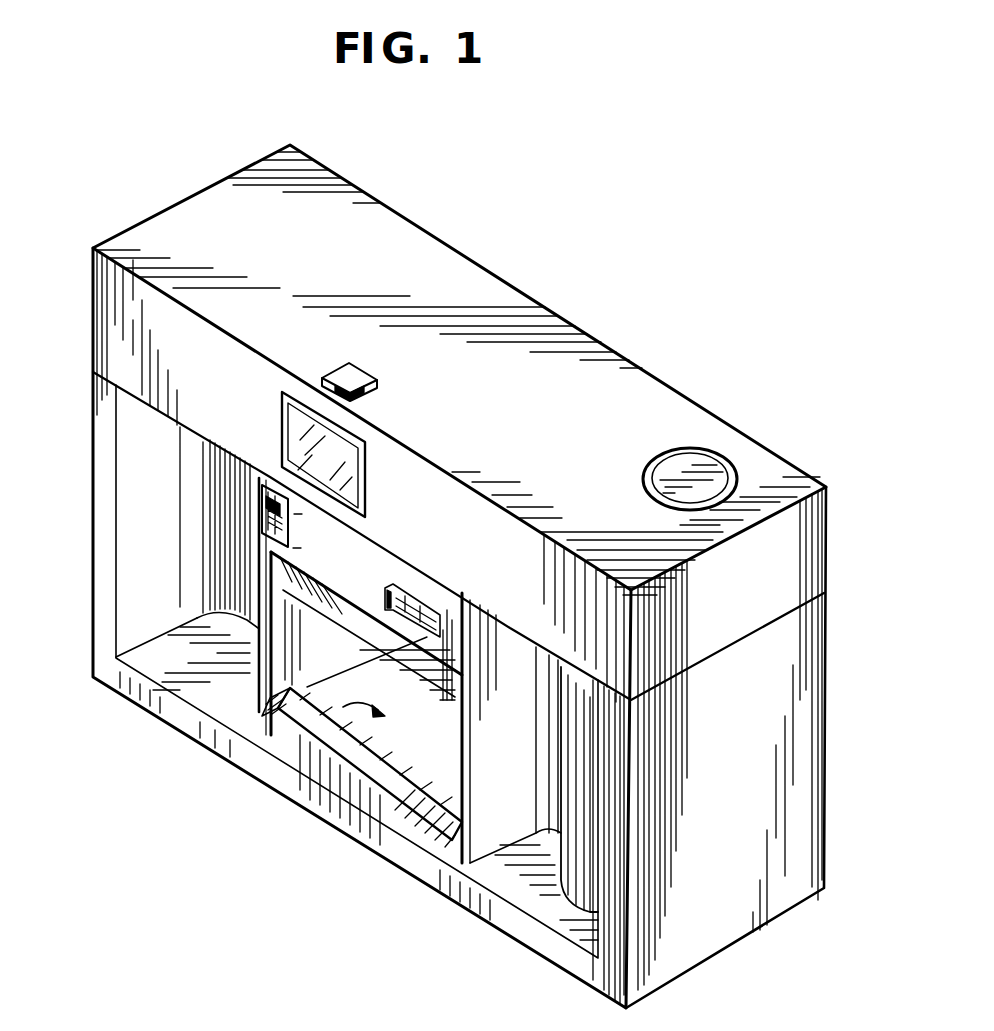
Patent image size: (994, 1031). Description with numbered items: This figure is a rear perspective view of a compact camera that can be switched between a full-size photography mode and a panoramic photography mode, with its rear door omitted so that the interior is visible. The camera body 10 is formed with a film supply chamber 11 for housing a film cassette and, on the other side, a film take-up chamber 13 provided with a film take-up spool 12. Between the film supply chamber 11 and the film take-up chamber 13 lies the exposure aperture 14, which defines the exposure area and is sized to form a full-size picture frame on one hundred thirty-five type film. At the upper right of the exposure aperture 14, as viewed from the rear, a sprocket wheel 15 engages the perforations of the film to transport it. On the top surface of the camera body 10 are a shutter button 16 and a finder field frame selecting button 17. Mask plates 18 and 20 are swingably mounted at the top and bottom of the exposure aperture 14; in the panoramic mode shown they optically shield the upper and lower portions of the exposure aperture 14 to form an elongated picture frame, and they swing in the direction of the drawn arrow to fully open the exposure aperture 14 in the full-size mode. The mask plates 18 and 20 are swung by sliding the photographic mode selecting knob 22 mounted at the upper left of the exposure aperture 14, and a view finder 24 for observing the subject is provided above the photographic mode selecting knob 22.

The camera body 10 is at (529, 282).
The film supply chamber 11 is at (148, 577).
The film take-up spool 12 is at (580, 762).
The film take-up chamber 13 is at (517, 886).
The exposure aperture 14 is at (293, 648).
The sprocket wheel 15 is at (405, 600).
The shutter button 16 is at (706, 478).
The finder field frame selecting button 17 is at (352, 362).
The mask plate 18 is at (448, 665).
The mask plate 20 is at (333, 743).
The photographic mode selecting knob 22 is at (268, 480).
The view finder 24 is at (300, 435).